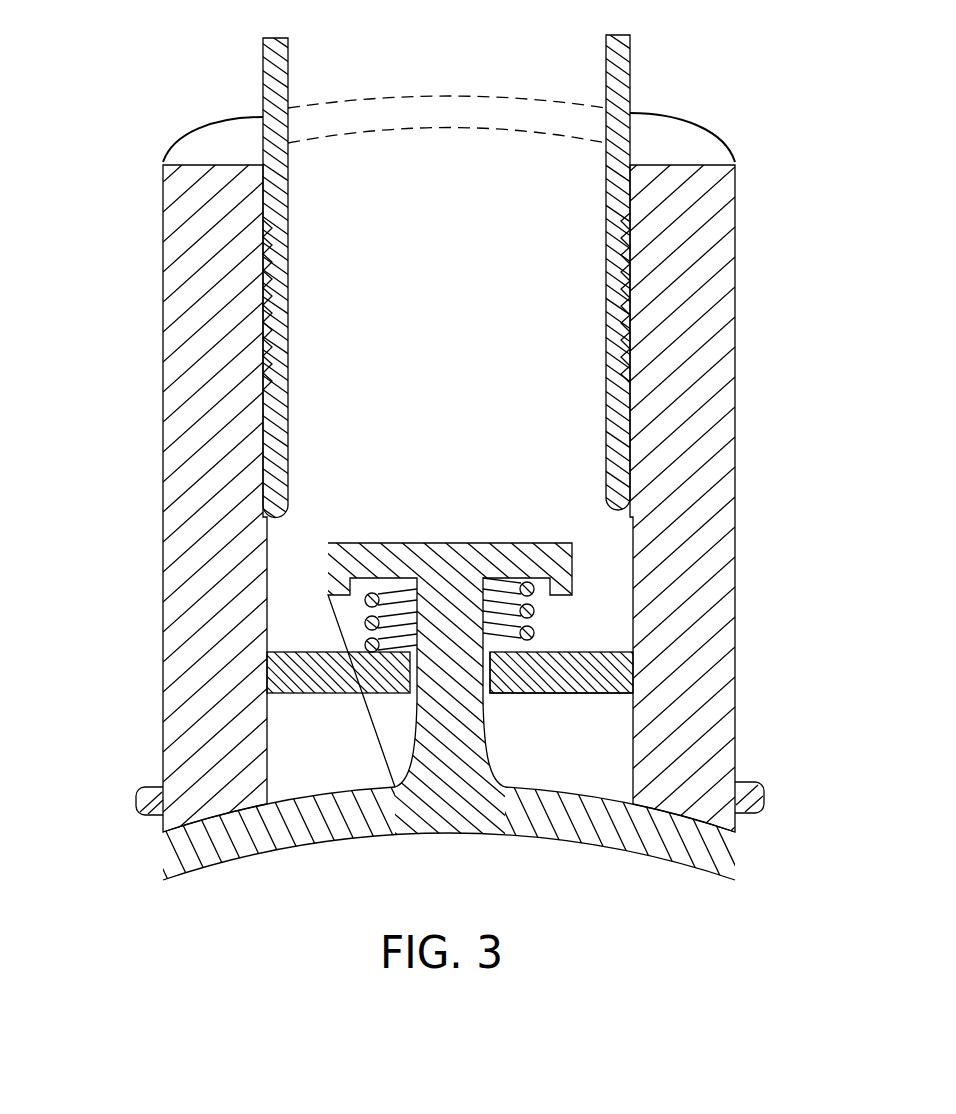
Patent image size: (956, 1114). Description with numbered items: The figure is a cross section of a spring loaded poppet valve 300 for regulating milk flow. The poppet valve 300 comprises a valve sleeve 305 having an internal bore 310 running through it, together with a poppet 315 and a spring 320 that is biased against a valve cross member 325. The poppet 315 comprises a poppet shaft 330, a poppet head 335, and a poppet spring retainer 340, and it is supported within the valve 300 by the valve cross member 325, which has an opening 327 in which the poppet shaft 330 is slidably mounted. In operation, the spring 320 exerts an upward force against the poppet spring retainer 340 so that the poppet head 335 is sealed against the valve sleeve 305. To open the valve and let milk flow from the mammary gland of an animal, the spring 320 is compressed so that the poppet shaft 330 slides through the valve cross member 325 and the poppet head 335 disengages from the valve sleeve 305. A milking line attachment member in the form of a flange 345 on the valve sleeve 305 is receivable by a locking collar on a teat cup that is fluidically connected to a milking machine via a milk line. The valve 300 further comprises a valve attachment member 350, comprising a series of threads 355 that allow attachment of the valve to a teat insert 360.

The poppet valve 300 is at (435, 528).
The valve sleeve 305 is at (722, 374).
The internal bore 310 is at (448, 340).
The poppet 315 is at (449, 768).
The spring 320 is at (365, 603).
The valve cross member 325 is at (572, 696).
The opening 327 is at (488, 670).
The poppet shaft 330 is at (461, 685).
The poppet head 335 is at (443, 685).
The poppet spring retainer 340 is at (572, 582).
The flange 345 is at (762, 799).
The valve attachment member 350 is at (662, 243).
The threads 355 is at (276, 240).
The teat insert 360 is at (272, 89).